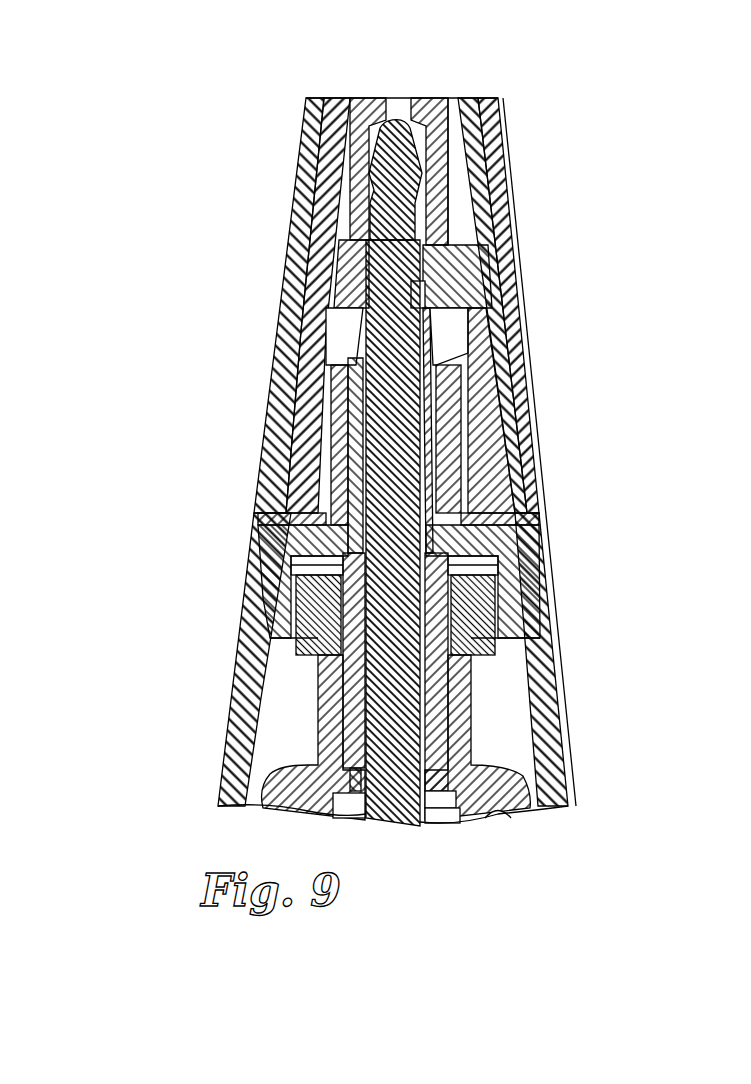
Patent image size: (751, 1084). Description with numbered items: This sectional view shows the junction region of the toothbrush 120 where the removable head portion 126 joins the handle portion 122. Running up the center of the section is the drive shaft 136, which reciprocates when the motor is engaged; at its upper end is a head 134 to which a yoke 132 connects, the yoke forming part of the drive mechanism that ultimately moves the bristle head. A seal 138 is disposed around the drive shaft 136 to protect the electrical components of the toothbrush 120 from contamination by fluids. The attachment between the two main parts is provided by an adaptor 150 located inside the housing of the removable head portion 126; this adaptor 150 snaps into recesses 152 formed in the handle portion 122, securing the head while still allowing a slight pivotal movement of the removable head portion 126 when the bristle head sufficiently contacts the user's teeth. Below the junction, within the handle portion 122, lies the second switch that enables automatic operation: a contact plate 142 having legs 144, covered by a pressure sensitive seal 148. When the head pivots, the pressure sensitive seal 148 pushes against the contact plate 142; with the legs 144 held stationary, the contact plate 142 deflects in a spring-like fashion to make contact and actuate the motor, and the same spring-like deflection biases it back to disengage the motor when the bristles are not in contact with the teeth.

The toothbrush 120 is at (236, 381).
The handle portion 122 is at (606, 682).
The removable head portion 126 is at (583, 349).
The yoke 132 is at (396, 214).
The head 134 is at (415, 162).
The drive shaft 136 is at (400, 821).
The seal 138 is at (422, 290).
The contact plate 142 is at (470, 558).
The legs 144 is at (300, 598).
The pressure sensitive seal 148 is at (262, 598).
The adaptor 150 is at (490, 394).
The recesses 152 is at (320, 451).